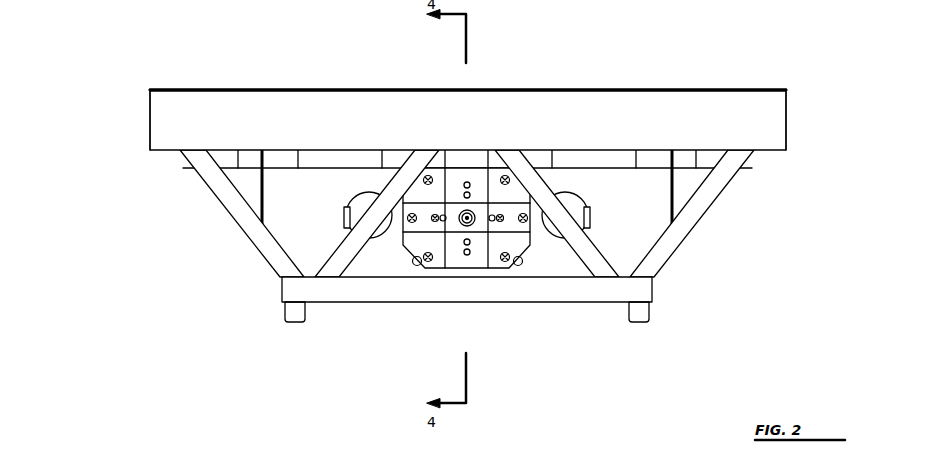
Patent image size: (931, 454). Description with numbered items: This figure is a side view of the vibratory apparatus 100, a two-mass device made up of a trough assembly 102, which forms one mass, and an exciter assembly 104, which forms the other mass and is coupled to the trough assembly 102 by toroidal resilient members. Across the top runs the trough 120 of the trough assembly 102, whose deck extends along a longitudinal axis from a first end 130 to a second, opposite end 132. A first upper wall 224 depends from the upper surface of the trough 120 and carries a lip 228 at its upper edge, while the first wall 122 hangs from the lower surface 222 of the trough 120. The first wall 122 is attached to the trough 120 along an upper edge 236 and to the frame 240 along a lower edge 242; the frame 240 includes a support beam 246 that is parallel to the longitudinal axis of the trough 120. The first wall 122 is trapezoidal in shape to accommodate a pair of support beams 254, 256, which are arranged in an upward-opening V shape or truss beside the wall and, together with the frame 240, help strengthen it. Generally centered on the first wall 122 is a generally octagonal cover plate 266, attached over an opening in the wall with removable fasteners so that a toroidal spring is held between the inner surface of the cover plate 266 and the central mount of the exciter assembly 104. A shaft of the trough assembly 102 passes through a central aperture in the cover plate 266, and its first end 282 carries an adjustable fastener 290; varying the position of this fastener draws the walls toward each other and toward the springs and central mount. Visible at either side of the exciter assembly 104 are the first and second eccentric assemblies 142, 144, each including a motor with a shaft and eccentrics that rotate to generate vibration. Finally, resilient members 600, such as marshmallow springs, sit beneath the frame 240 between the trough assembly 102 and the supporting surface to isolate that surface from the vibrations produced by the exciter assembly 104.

The vibratory apparatus 100 is at (389, 59).
The trough assembly 102 is at (579, 79).
The exciter assembly 104 is at (589, 195).
The trough 120 is at (780, 100).
The first wall 122 is at (547, 260).
The first end 130 is at (144, 141).
The second end 132 is at (791, 150).
The first eccentric assembly 142 is at (345, 214).
The second eccentric assembly 144 is at (590, 211).
The lower surface 222 is at (757, 153).
The first upper wall 224 is at (170, 118).
The lip 228 is at (180, 90).
The upper edge 236 is at (443, 151).
The frame 240 is at (619, 292).
The lower edge 242 is at (377, 270).
The support beam 246 is at (404, 288).
The support beam 254 is at (190, 176).
The support beam 256 is at (729, 182).
The cover plate 266 is at (466, 249).
The first end 282 is at (471, 227).
The fastener 290 is at (467, 228).
The resilient members 600 is at (290, 307).